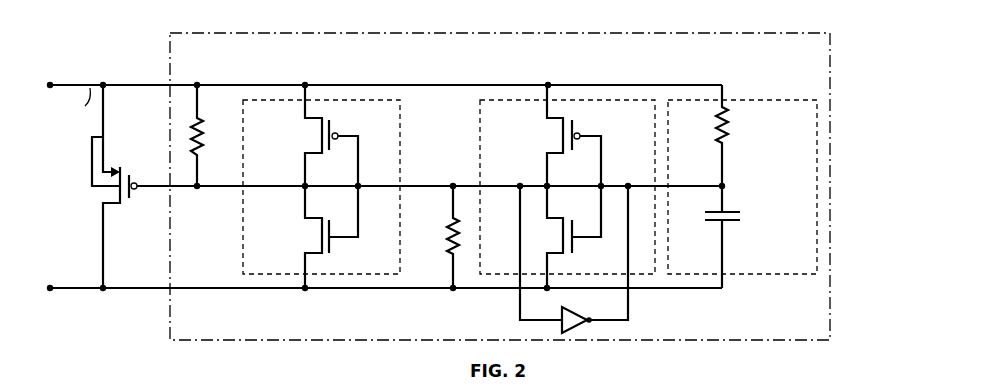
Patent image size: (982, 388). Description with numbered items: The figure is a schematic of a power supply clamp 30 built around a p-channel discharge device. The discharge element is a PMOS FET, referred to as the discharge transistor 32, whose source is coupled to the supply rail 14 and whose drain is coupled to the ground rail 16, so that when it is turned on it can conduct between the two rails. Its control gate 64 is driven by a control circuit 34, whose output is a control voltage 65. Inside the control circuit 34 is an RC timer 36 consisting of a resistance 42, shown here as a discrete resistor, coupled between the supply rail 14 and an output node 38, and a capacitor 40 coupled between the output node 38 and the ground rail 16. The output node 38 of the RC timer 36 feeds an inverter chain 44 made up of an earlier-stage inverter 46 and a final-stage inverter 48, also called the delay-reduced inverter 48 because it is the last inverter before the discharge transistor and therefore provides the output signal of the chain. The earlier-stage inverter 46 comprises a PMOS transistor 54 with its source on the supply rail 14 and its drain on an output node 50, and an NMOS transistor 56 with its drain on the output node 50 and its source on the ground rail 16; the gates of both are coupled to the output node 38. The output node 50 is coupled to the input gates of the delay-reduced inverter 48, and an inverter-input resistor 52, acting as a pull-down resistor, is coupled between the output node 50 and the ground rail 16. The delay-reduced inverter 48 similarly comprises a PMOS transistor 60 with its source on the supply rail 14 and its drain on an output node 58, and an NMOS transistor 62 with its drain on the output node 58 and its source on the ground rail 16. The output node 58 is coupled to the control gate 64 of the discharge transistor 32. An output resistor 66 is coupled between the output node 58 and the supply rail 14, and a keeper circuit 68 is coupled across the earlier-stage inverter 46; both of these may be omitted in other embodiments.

The supply rail 14 is at (52, 82).
The ground rail 16 is at (50, 290).
The power supply clamp 30 is at (846, 217).
The PMOS FET (discharge transistor) 32 is at (109, 186).
The control circuit 34 is at (500, 186).
The RC timer 36 is at (767, 100).
The output node 38 is at (725, 188).
The capacitor 40 is at (735, 224).
The resistance 42 is at (731, 127).
The inverter chain 44 is at (401, 297).
The earlier-stage inverter 46 is at (492, 98).
The final-stage inverter (delay-reduced inverter) 48 is at (252, 98).
The output node 50 is at (546, 183).
The inverter-input resistor 52 is at (443, 240).
The PMOS transistor 54 is at (574, 127).
The NMOS transistor 56 is at (574, 247).
The output node 58 is at (304, 184).
The PMOS transistor 60 is at (331, 125).
The NMOS transistor 62 is at (331, 247).
The control gate 64 is at (134, 181).
The control voltage 65 is at (158, 190).
The resistor (output resistor) 66 is at (203, 143).
The keeper circuit 68 is at (575, 310).